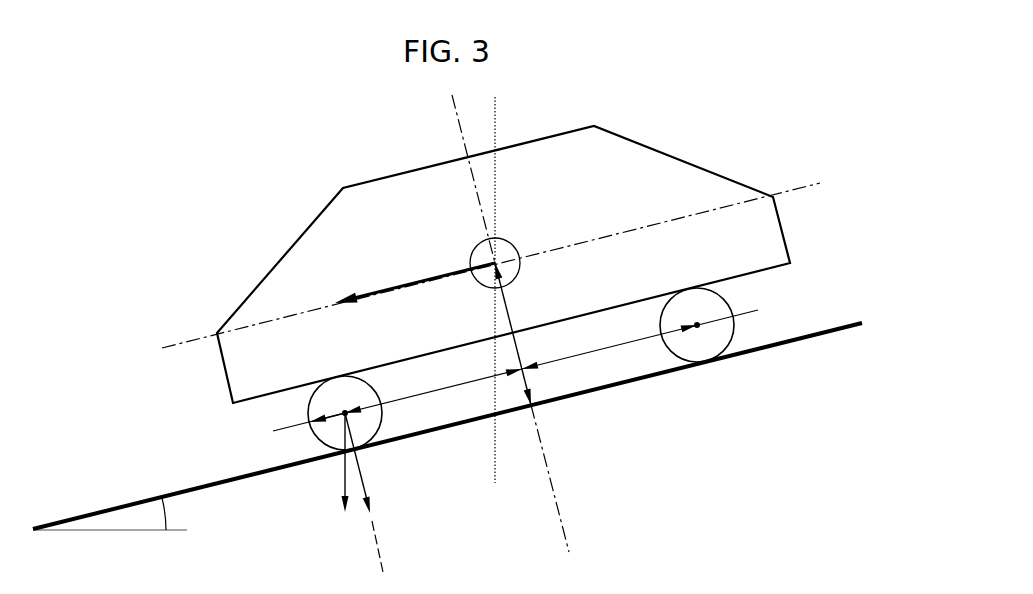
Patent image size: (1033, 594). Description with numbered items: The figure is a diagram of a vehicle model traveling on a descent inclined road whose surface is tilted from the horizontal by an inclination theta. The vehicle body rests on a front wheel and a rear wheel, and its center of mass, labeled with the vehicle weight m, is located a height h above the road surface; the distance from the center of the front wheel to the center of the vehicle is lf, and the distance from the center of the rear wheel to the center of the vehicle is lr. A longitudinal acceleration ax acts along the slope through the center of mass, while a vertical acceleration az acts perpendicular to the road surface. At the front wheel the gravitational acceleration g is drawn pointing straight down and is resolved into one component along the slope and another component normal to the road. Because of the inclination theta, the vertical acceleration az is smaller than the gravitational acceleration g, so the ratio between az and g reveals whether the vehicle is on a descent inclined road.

The vehicle weight m is at (491, 323).
The longitudinal acceleration ax is at (385, 309).
The vertical acceleration value az is at (630, 416).
The height of center of gravity h is at (513, 334).
The distance from the center of a front wheel to the center of the vehicle lf is at (397, 400).
The distance from the center of a rear wheel to the center of the vehicle lr is at (640, 345).
The gravitational acceleration value g is at (320, 492).
The inclination of a road surface theta is at (110, 514).